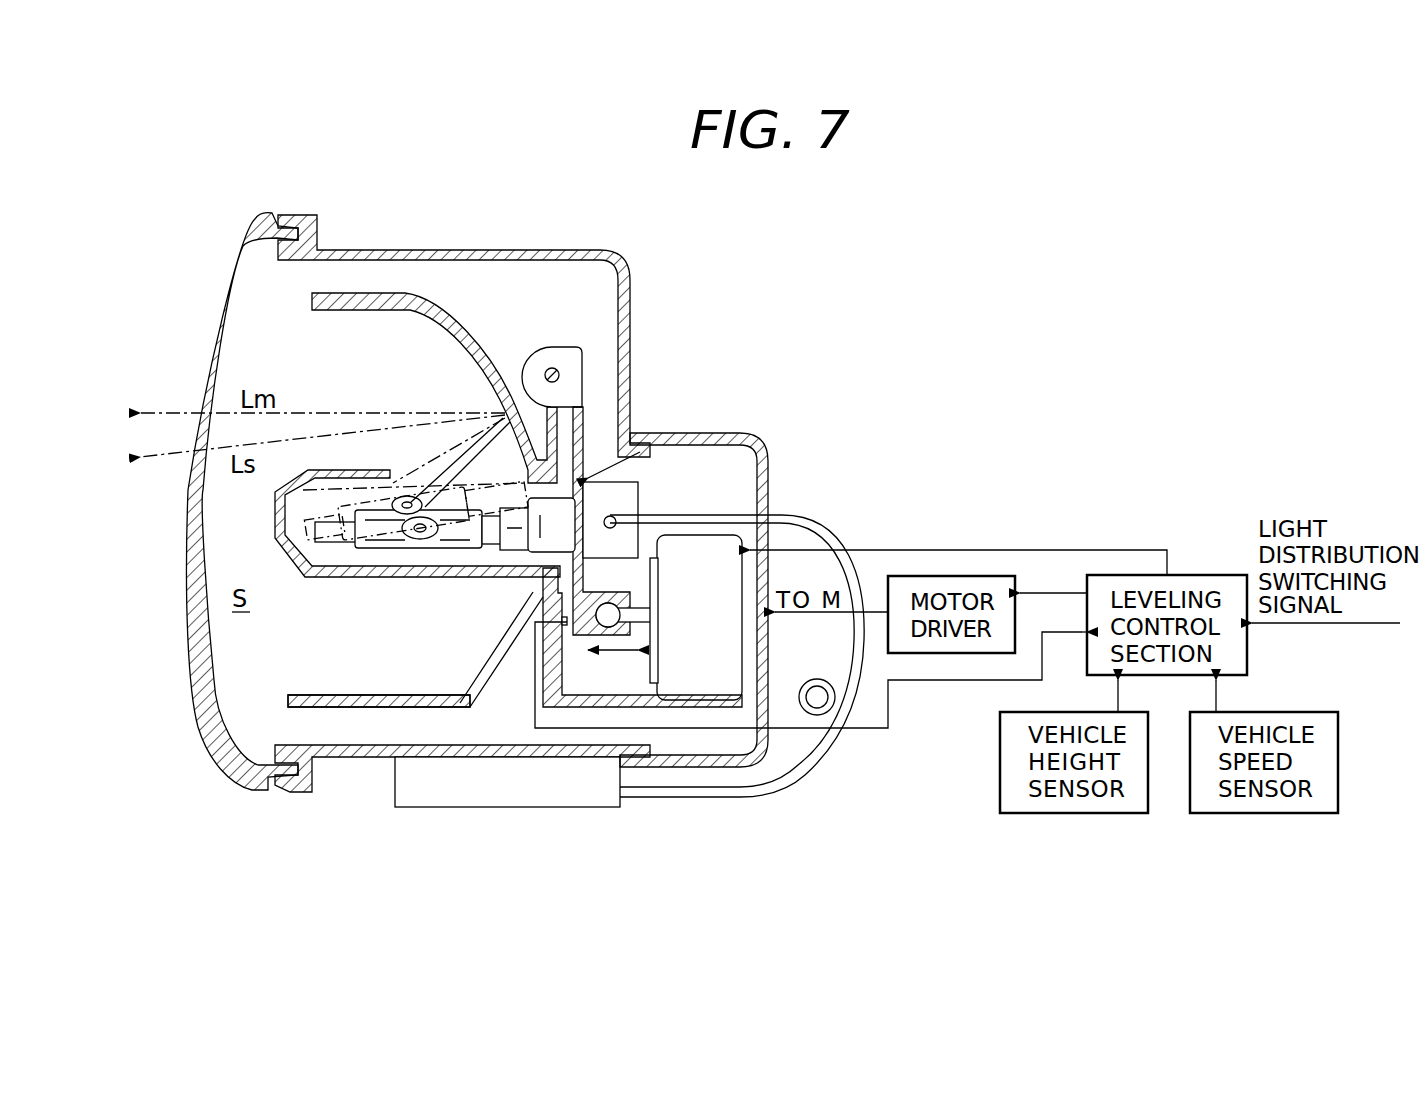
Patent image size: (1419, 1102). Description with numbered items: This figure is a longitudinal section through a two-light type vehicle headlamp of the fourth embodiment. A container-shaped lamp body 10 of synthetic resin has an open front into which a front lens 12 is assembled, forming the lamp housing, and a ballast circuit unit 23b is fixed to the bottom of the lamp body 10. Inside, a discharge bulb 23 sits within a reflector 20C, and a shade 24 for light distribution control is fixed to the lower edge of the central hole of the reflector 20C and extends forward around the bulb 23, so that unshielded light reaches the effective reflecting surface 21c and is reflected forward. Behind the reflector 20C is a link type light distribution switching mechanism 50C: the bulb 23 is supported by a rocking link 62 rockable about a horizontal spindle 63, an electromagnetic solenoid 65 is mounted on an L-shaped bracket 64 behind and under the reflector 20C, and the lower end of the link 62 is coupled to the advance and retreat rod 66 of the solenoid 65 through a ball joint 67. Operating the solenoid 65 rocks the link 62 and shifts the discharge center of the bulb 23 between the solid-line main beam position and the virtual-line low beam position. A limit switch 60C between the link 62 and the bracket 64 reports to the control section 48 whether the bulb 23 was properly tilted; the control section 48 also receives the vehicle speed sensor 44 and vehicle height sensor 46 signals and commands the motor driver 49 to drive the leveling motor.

The lamp body 10 is at (622, 262).
The front lens 12 is at (185, 640).
The reflector 20C is at (486, 335).
The effective reflecting surface 21c is at (448, 330).
The discharge bulb 23 is at (378, 548).
The ballast circuit unit 23b is at (395, 790).
The shade 24 is at (275, 512).
The vehicle speed sensor 44 is at (1338, 750).
The vehicle height sensor 46 is at (1000, 750).
The control section 48 is at (1212, 575).
The motor driver 49 is at (936, 576).
The link type light distribution switching mechanism 50C is at (632, 440).
The limit switch 60C is at (543, 612).
The rocking link 62 is at (576, 427).
The horizontal spindle 63 is at (560, 375).
The bracket 64 is at (547, 675).
The electromagnetic solenoid 65 is at (710, 682).
The advance and retreat rod 66 is at (643, 628).
The ball joint 67 is at (610, 640).